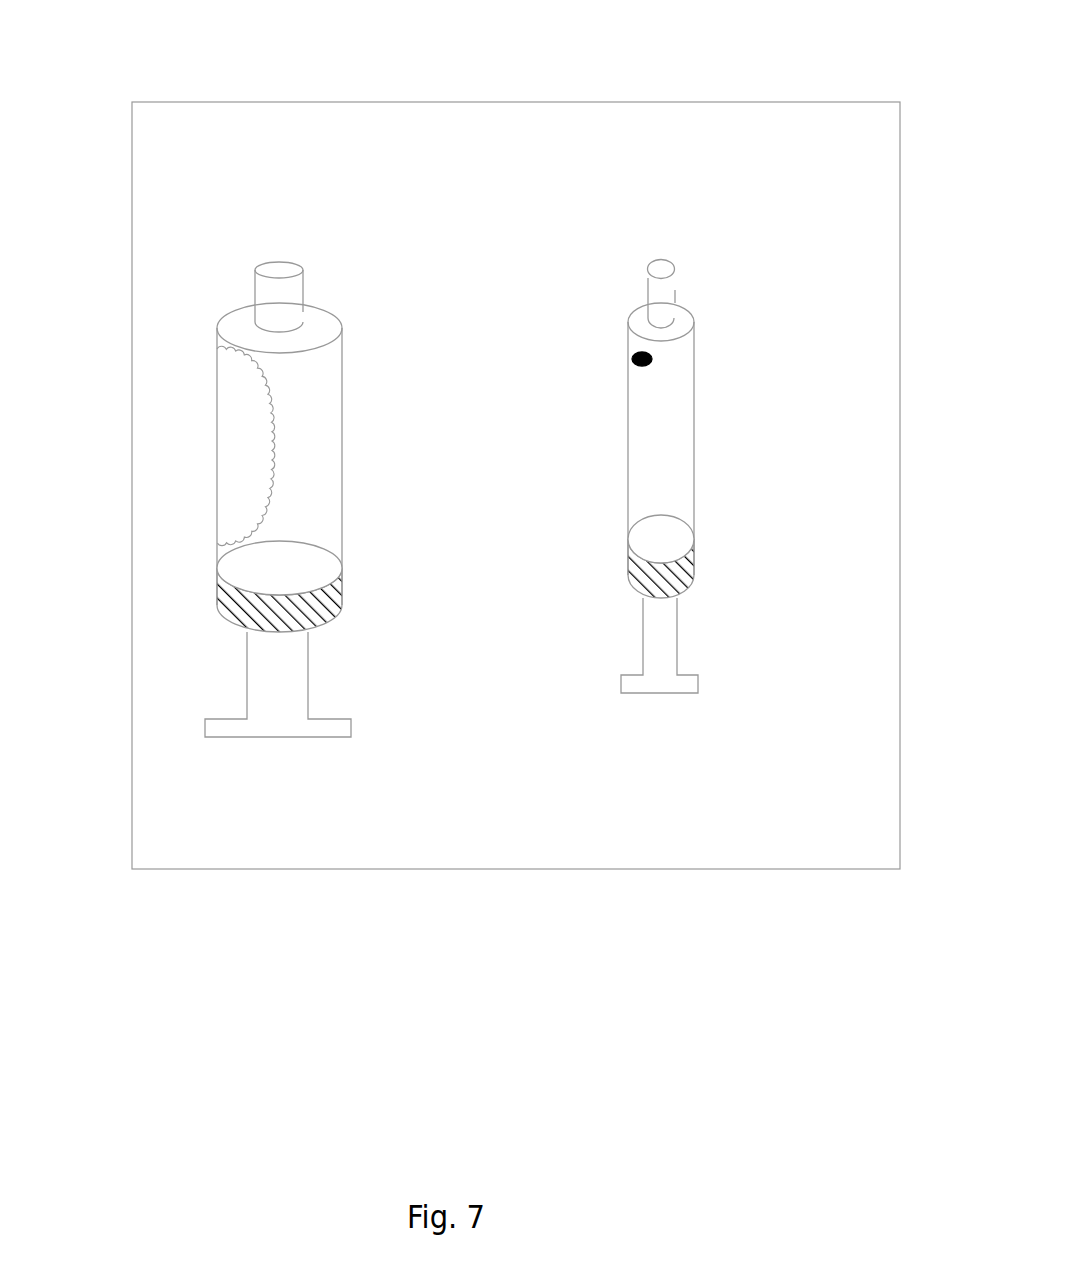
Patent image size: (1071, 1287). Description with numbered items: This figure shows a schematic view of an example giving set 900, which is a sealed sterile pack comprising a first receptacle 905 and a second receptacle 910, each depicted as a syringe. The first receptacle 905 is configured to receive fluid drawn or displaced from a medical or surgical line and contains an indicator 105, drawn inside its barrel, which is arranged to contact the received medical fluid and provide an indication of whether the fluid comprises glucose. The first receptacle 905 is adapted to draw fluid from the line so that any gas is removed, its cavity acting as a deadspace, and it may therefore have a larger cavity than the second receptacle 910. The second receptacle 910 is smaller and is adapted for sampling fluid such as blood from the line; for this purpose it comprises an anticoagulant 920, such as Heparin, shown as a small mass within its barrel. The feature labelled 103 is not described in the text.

The giving set 900 is at (470, 103).
The first receptacle 905 is at (198, 628).
The second receptacle 910 is at (710, 507).
The anticoagulant 920 is at (642, 357).
The syringe barrel 103 is at (218, 445).
The indicator 105 is at (237, 468).